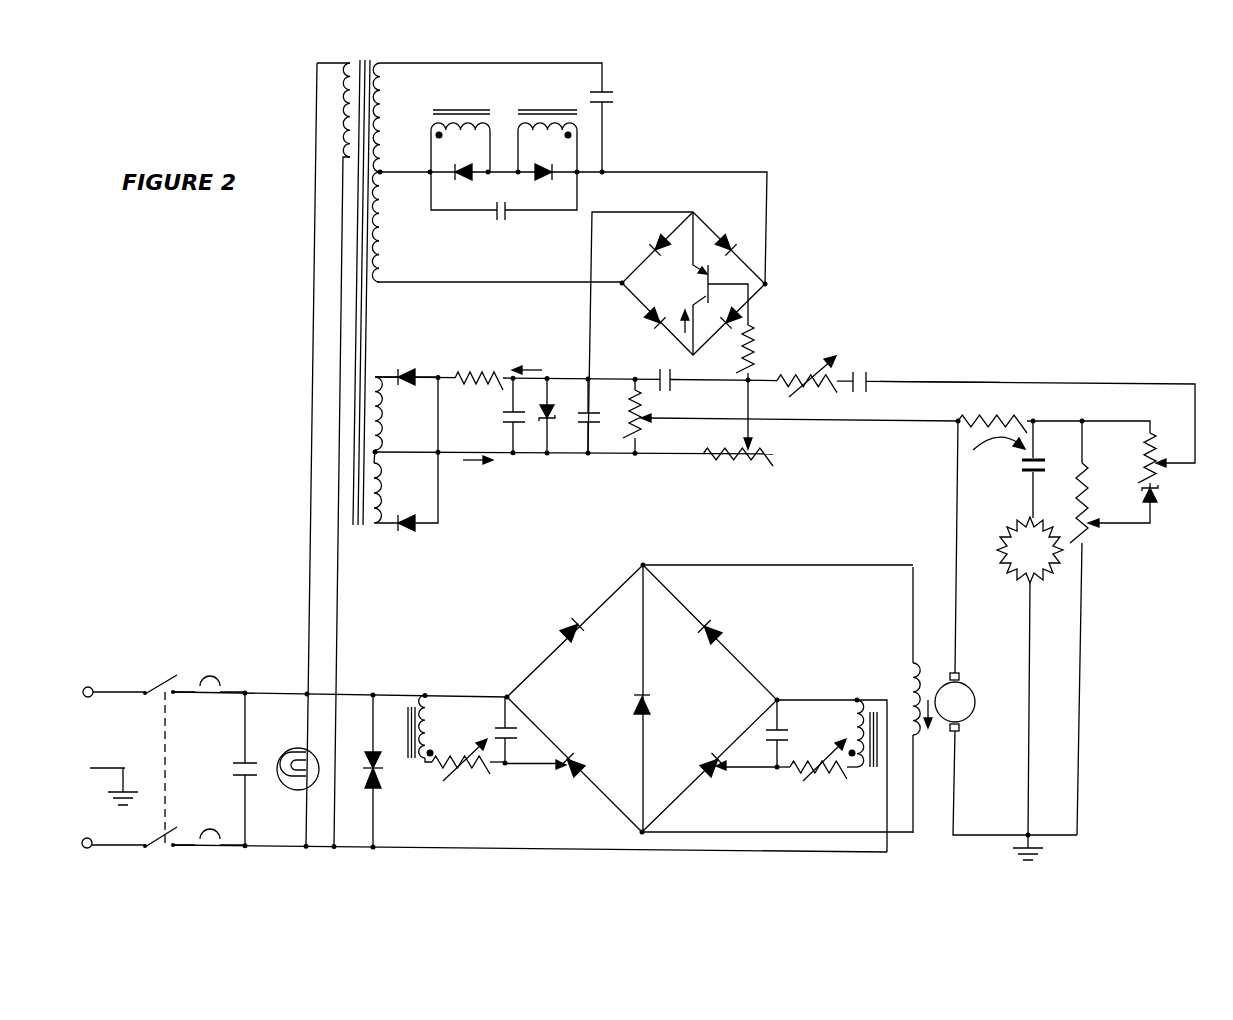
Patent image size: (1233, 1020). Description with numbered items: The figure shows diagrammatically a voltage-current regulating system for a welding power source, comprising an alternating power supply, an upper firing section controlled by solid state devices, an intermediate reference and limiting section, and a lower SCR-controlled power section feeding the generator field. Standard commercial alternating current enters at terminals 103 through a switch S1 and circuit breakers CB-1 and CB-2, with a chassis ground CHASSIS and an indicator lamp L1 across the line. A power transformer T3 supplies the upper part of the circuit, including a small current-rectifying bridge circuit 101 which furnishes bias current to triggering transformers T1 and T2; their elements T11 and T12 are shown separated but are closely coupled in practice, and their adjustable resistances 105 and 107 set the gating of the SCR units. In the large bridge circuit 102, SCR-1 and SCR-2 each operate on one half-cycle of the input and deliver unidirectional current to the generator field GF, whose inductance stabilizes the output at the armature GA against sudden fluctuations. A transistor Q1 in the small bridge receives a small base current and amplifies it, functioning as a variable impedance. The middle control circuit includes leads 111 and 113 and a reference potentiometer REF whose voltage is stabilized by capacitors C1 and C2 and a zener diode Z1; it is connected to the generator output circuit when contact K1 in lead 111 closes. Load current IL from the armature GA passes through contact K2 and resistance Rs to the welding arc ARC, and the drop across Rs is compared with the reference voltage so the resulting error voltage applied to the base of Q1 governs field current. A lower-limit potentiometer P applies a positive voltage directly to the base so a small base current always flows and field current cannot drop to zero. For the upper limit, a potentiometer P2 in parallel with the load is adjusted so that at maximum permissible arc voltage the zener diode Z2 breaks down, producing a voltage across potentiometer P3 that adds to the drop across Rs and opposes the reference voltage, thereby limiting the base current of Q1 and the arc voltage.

The power transformer T3 is at (368, 62).
The triggering transformer T1 is at (451, 110).
The triggering transformer T2 is at (538, 110).
The small current-rectifying bridge circuit 101 is at (709, 224).
The transistor Q1 is at (704, 284).
The capacitor C1 is at (503, 412).
The zener diode Z1 is at (557, 418).
The capacitor C2 is at (595, 419).
The reference potentiometer REF is at (643, 432).
The lead 113 is at (907, 421).
The potentiometer P is at (733, 461).
The contact K1 is at (858, 371).
The lead 111 is at (923, 378).
The resistance Rs is at (990, 417).
The load current IL is at (999, 453).
The contact K2 is at (1022, 471).
The welding arc ARC is at (1030, 676).
The potentiometer P2 is at (1089, 504).
The potentiometer P3 is at (1141, 450).
The zener diode Z2 is at (1160, 494).
The armature GA is at (957, 699).
The generator field GF is at (912, 667).
The large bridge circuit 102 is at (607, 800).
The SCR unit SCR-1 is at (567, 772).
The SCR unit SCR-2 is at (715, 775).
The triggering transformer element T11 is at (428, 731).
The adjustable resistance 105 is at (467, 775).
The triggering transformer element T12 is at (857, 730).
The adjustable resistance 107 is at (832, 772).
The terminals 103 is at (88, 687).
The switch S1 is at (158, 838).
The circuit breaker CB-1 is at (211, 677).
The circuit breaker CB-2 is at (210, 831).
The chassis ground CHASSIS is at (104, 774).
The lamp L1 is at (283, 789).